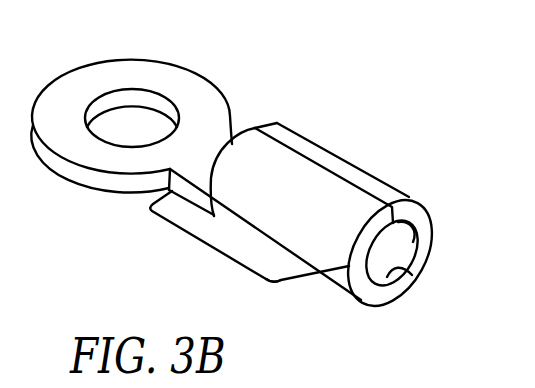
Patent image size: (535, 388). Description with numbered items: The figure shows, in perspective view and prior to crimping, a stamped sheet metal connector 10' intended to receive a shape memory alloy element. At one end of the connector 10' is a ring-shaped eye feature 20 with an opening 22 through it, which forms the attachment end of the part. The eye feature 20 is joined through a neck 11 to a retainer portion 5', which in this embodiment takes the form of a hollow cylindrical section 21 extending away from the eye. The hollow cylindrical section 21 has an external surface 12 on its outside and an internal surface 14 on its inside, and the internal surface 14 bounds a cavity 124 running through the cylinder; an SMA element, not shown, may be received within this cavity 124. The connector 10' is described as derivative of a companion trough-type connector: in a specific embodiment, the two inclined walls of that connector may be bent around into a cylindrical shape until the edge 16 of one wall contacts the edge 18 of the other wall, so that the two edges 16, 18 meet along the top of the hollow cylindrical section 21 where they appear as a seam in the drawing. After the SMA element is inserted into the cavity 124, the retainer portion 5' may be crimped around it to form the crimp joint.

The connector 10' is at (269, 187).
The eye feature 20 is at (162, 103).
The opening 22 is at (118, 125).
The neck 11 is at (236, 135).
The edge 16 is at (339, 214).
The hollow cylindrical section 21 is at (388, 182).
The edge 18 is at (346, 186).
The external surface 12 is at (413, 238).
The cavity 124 is at (413, 278).
The retainer portion 5' is at (249, 275).
The internal surface 14 is at (325, 283).